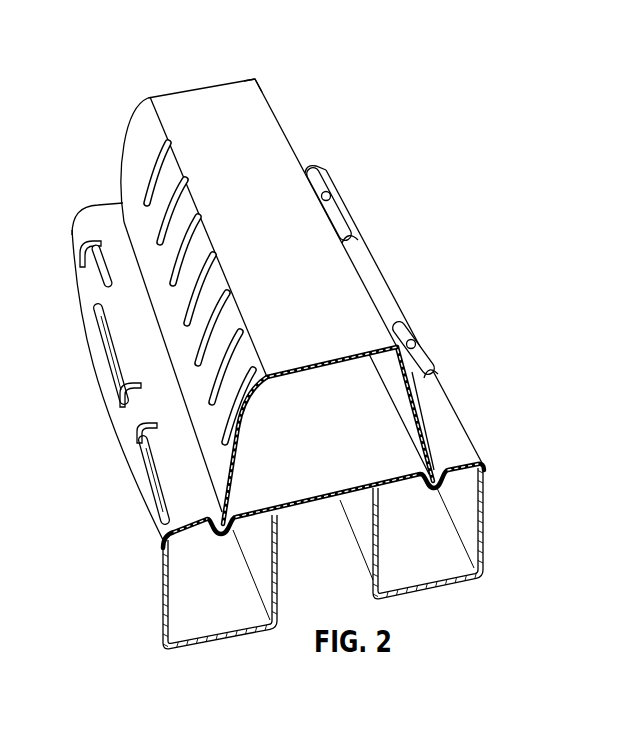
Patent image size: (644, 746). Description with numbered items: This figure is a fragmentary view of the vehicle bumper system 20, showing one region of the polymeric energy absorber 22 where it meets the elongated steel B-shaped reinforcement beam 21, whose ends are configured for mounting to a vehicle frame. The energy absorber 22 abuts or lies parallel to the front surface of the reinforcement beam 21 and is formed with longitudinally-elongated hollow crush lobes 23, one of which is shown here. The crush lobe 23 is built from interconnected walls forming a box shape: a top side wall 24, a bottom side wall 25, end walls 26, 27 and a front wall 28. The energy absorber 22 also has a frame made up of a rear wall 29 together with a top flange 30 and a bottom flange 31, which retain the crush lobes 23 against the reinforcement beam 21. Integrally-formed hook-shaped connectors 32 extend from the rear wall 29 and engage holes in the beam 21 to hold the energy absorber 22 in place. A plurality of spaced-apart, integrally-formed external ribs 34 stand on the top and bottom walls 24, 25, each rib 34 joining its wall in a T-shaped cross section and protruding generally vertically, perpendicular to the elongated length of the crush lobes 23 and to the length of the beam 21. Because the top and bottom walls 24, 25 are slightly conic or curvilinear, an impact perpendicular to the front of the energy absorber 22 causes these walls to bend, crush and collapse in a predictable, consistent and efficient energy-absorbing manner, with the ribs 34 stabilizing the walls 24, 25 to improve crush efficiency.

The vehicle bumper system 20 is at (394, 107).
The reinforcement beam 21 is at (163, 588).
The energy absorber 22 is at (125, 150).
The crush lobes 23 is at (258, 79).
The top side wall 24 is at (392, 376).
The bottom side wall 25 is at (242, 428).
The end wall 26 is at (202, 88).
The end wall 27 is at (32, 0).
The front wall 28 is at (251, 176).
The rear wall 29 is at (143, 357).
The top flange 30 is at (372, 282).
The bottom flange 31 is at (110, 330).
The hook-shaped connectors 32 is at (95, 270).
The external ribs 34 is at (155, 217).